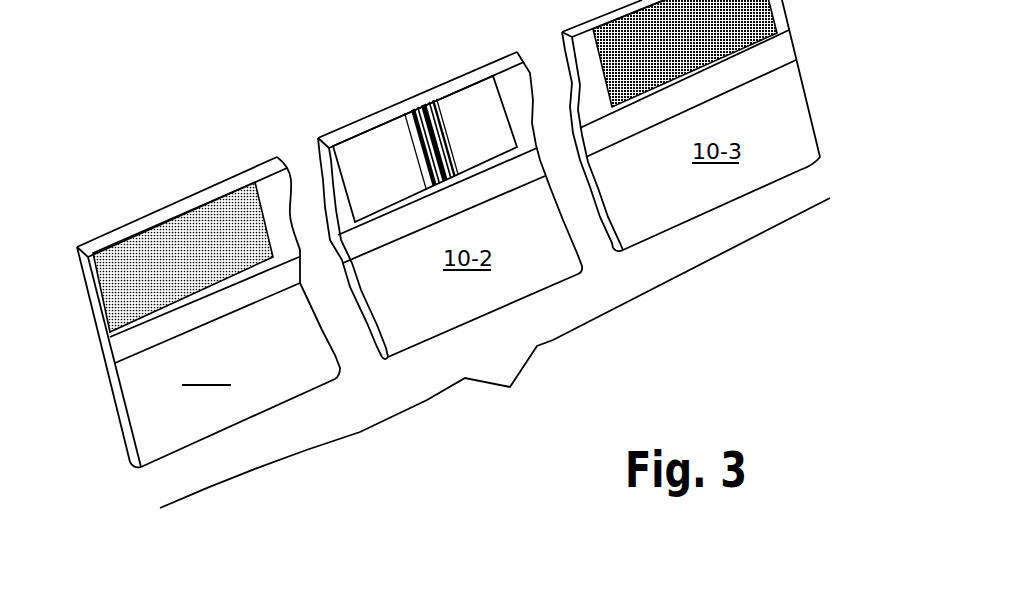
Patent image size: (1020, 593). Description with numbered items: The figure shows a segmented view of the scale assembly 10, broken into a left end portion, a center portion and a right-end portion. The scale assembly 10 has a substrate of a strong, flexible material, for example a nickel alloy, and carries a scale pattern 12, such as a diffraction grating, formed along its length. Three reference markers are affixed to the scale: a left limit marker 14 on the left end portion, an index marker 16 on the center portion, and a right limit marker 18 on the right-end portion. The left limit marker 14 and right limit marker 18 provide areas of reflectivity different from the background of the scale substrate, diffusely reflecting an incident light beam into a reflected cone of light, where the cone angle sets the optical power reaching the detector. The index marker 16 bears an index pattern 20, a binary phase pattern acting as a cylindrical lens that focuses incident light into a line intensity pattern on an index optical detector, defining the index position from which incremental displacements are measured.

The scale assembly 10 is at (495, 353).
The scale pattern 12 is at (127, 352).
The left limit marker 14 is at (100, 287).
The index marker 16 is at (363, 147).
The right limit marker 18 is at (605, 16).
The index pattern 20 is at (437, 72).